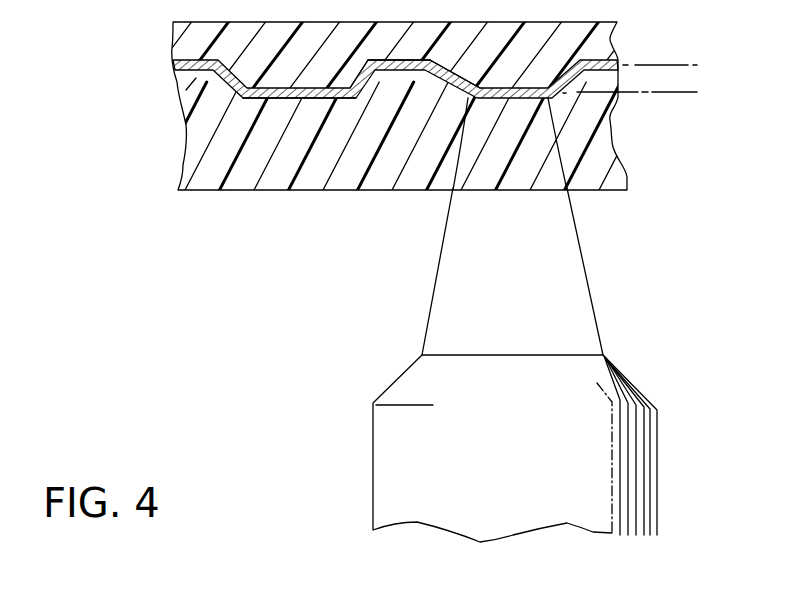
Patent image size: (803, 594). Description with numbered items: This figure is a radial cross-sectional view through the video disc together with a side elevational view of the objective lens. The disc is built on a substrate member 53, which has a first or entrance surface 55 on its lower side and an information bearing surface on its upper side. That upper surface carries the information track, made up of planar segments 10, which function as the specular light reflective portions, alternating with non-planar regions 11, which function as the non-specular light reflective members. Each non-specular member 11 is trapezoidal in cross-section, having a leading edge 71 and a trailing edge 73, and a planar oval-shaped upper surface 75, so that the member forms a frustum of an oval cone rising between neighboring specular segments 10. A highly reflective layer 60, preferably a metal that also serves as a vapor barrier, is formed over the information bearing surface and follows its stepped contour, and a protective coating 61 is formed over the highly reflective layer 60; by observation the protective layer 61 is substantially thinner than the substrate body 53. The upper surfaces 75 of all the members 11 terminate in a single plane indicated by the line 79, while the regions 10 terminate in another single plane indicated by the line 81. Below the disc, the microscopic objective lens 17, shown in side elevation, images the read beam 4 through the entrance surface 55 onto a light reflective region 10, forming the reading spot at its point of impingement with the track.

The beam 4 is at (427, 323).
The specular light reflective segment 10 is at (279, 95).
The non-specular light reflective member 11 is at (197, 75).
The microscopic objective lens 17 is at (377, 442).
The substrate member 53 is at (213, 183).
The first or entrance surface 55 is at (272, 190).
The highly reflective layer 60 is at (177, 63).
The protective coating 61 is at (173, 47).
The leading edge 71 is at (438, 77).
The trailing edge 73 is at (352, 92).
The oval-shaped upper surface 75 is at (397, 72).
The line indicating single plane of upper surfaces 79 is at (650, 65).
The line indicating single plane of regions 81 is at (670, 95).